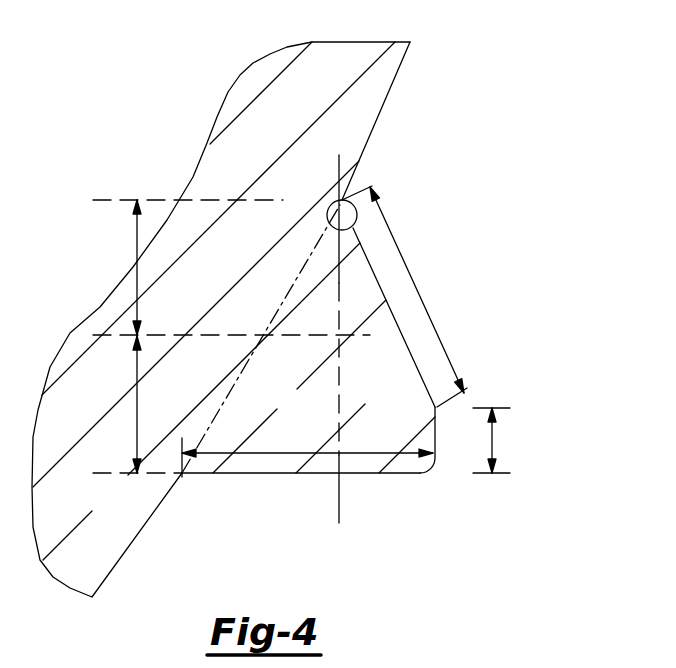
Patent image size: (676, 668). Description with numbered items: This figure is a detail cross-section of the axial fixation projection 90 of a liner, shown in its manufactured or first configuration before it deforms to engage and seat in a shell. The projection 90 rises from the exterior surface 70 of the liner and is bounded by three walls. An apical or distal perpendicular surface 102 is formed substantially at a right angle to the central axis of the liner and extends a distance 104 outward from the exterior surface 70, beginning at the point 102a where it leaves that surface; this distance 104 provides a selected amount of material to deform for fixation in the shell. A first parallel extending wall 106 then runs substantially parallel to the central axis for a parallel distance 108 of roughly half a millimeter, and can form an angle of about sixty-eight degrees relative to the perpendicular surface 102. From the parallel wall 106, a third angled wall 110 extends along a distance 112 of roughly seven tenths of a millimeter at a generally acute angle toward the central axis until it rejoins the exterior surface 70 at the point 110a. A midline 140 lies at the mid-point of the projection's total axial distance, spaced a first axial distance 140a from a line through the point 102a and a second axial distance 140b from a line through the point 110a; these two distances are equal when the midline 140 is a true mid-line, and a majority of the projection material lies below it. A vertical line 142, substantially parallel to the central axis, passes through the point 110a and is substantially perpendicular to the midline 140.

The exterior surface 70 is at (138, 542).
The axial fixation projection 90 is at (272, 495).
The perpendicular surface 102 is at (366, 473).
The extension point of the first surface 102a is at (183, 478).
The distance 104 is at (302, 452).
The first parallel extending wall 106 is at (433, 432).
The parallel distance 108 is at (497, 437).
The third angled wall 110 is at (408, 340).
The rejoining point 110a is at (327, 221).
The distance 112 is at (417, 288).
The midline 140 is at (225, 334).
The first axial distance 140a is at (137, 387).
The second axial distance 140b is at (137, 240).
The vertical line 142 is at (338, 510).